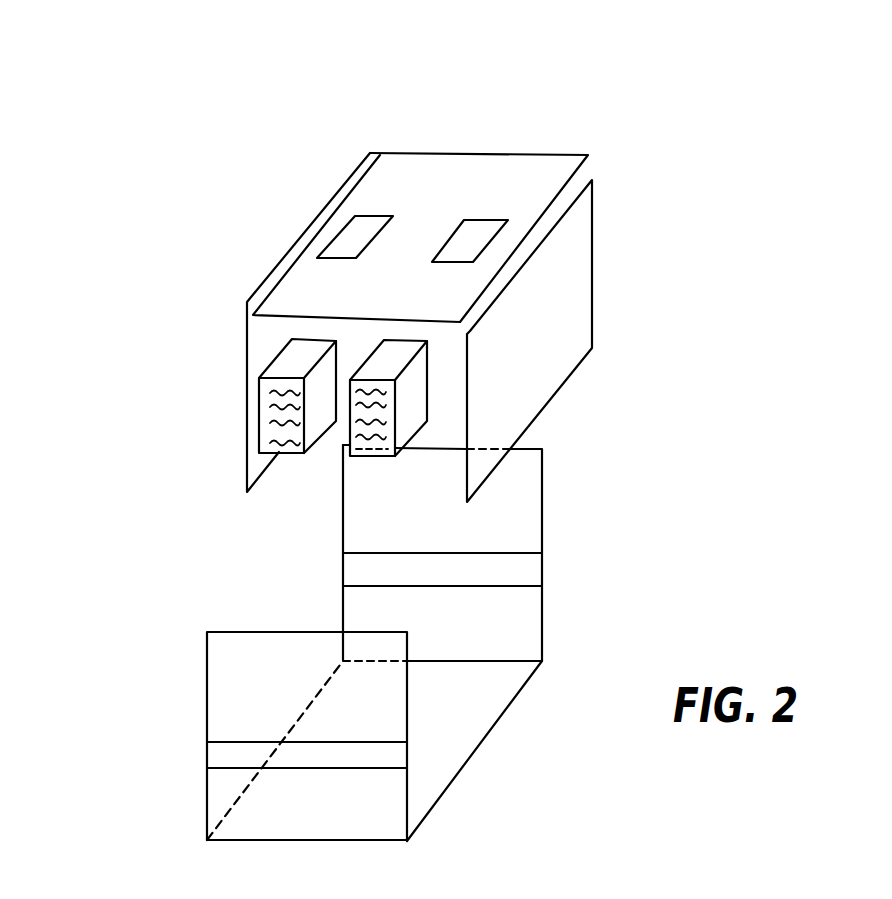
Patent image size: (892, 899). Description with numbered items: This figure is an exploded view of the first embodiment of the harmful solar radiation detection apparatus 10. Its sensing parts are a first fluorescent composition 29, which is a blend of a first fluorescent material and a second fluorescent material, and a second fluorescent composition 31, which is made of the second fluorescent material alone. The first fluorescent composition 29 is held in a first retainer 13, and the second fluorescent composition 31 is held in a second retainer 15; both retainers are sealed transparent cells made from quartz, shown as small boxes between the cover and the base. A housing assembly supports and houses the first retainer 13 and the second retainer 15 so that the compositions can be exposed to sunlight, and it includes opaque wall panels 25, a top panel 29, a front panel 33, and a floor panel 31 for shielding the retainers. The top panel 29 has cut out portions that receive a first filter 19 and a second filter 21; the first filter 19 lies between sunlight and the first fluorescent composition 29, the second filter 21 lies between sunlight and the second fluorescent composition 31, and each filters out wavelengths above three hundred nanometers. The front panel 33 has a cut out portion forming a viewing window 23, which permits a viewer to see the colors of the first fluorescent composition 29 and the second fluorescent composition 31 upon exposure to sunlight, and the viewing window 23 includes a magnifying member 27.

The electrical connector assembly 10 is at (616, 118).
The first retainer 13 is at (277, 354).
The second retainer 15 is at (408, 362).
The first filter 19 is at (345, 243).
The second filter 21 is at (467, 245).
The viewing window 23 is at (412, 748).
The opaque wall panels 25 is at (268, 267).
The magnifying member 27 is at (217, 758).
The first fluorescent composition 29 is at (418, 177).
The second fluorescent composition 31 is at (383, 430).
The front panel 33 is at (393, 678).